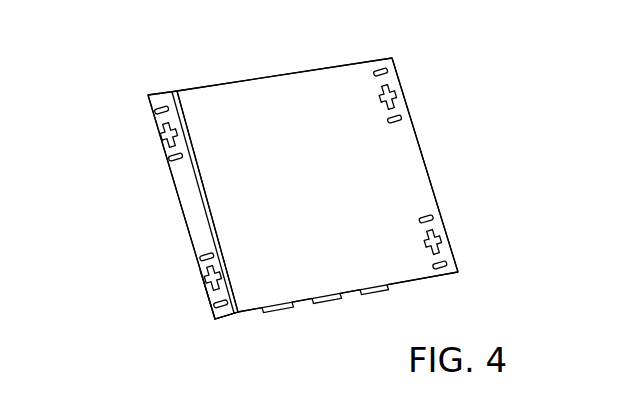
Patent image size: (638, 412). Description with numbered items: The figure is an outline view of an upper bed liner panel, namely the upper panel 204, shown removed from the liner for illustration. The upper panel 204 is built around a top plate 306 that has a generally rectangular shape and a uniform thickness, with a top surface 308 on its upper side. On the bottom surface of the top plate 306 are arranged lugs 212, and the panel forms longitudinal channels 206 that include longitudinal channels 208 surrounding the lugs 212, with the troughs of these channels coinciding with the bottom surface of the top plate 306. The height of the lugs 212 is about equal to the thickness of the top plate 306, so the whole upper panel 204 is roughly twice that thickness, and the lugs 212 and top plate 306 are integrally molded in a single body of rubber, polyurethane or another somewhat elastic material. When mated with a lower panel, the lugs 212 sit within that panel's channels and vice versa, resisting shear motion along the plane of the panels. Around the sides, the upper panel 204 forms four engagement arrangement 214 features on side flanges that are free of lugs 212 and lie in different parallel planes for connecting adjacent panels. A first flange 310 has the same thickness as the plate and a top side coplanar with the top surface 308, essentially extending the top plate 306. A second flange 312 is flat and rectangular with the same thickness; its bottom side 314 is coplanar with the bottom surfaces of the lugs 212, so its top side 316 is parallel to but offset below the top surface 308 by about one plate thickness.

The upper panel 204 is at (363, 71).
The longitudinal channels 206 is at (399, 292).
The longitudinal channels 208 is at (298, 310).
The lugs 212 is at (323, 302).
The engagement arrangement 214 is at (150, 140).
The top plate 306 is at (182, 210).
The top surface 308 is at (199, 101).
The first flange 310 is at (413, 150).
The second flange 312 is at (184, 177).
The bottom side 314 is at (226, 320).
The top side 316 is at (196, 239).